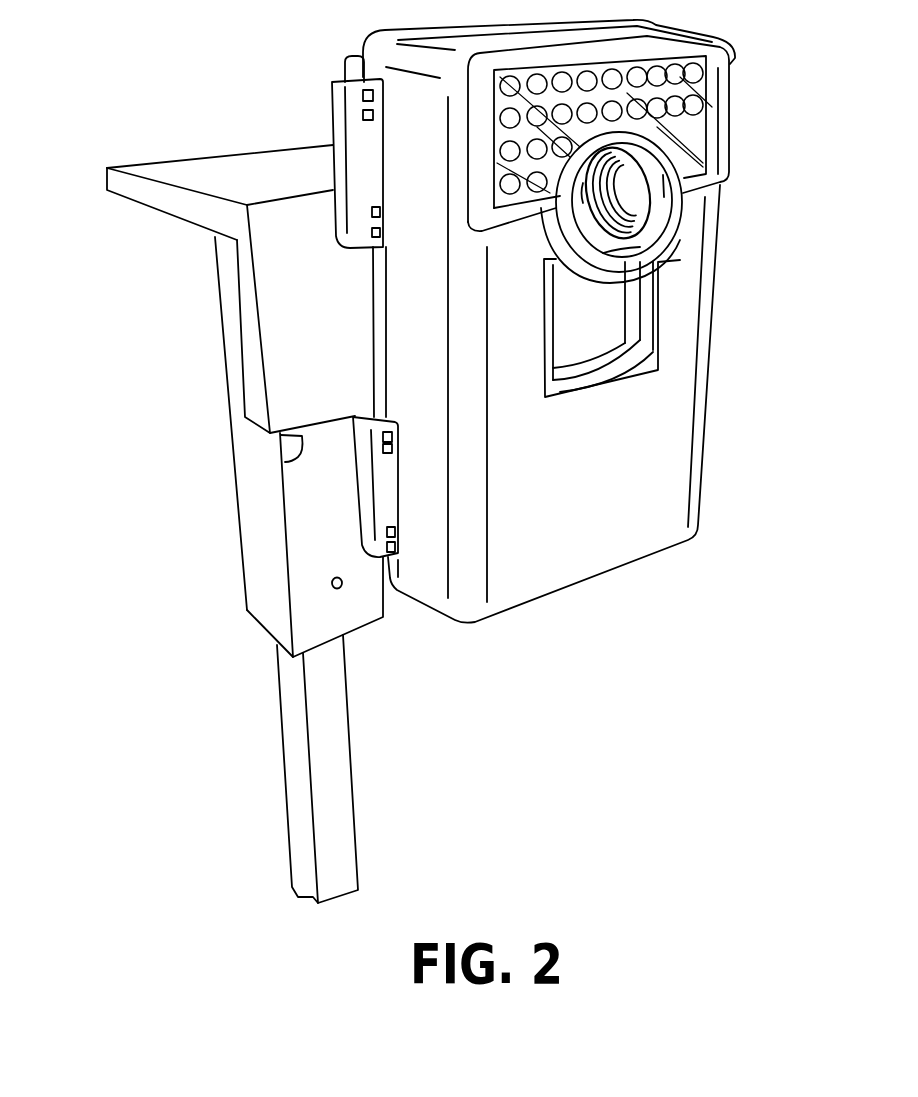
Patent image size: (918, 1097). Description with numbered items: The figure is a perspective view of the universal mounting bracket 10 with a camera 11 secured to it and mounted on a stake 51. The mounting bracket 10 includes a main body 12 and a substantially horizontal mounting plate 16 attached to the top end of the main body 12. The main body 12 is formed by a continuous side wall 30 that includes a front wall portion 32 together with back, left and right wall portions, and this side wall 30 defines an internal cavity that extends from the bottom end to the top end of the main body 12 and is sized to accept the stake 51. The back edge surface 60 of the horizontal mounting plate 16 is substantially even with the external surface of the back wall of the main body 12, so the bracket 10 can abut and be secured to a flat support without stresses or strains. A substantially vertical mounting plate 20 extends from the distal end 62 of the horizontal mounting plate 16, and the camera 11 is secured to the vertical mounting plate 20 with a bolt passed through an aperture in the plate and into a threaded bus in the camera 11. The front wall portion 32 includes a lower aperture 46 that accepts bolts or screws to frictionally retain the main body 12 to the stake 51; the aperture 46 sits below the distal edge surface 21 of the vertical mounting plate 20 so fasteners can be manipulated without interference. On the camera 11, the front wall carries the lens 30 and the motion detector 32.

The universal mounting bracket 10 is at (128, 411).
The camera 11 is at (469, 353).
The main body 12 is at (212, 343).
The substantially horizontal mounting plate 16 is at (178, 153).
The substantially vertical mounting plate 20 is at (249, 407).
The distal edge surface 21 is at (300, 450).
The continuous side wall 30 is at (627, 217).
The front wall portion 32 is at (580, 340).
The lower aperture 46 is at (335, 590).
The stake 51 is at (312, 740).
The back edge surface 60 is at (127, 185).
The distal end 62 is at (247, 247).